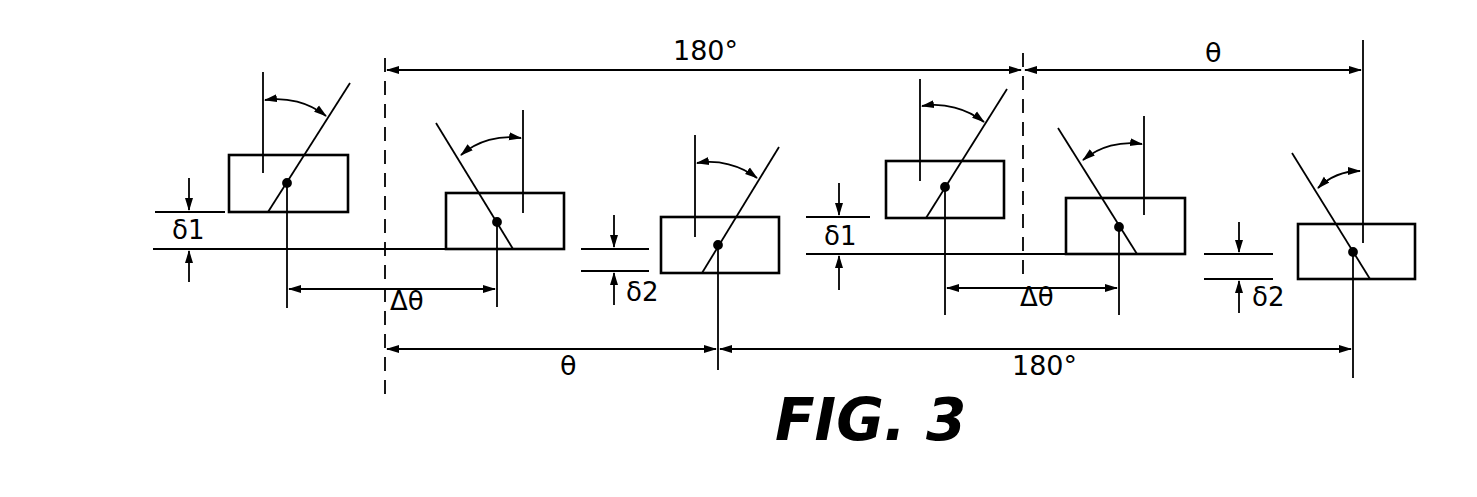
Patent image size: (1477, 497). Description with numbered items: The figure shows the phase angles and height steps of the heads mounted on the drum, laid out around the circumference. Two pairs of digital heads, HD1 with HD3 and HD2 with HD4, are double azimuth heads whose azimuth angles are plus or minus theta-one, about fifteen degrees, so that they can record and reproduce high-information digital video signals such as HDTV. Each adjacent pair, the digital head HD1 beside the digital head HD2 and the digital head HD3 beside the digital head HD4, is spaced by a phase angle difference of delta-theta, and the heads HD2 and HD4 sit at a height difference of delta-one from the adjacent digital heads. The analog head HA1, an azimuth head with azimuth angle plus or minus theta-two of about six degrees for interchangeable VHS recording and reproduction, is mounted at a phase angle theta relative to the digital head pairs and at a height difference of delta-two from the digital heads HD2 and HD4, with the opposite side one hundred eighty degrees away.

The digital head HD1 is at (248, 168).
The digital head HD2 is at (548, 200).
The analog head HA1 is at (676, 230).
The digital head HD3 is at (906, 175).
The digital head HD4 is at (1160, 212).